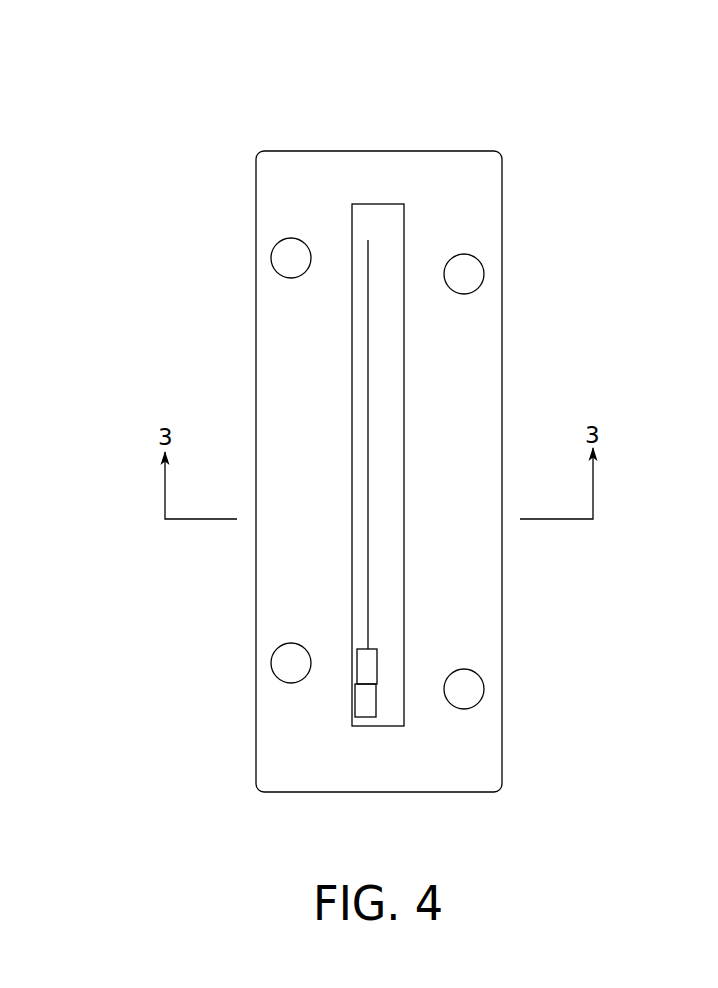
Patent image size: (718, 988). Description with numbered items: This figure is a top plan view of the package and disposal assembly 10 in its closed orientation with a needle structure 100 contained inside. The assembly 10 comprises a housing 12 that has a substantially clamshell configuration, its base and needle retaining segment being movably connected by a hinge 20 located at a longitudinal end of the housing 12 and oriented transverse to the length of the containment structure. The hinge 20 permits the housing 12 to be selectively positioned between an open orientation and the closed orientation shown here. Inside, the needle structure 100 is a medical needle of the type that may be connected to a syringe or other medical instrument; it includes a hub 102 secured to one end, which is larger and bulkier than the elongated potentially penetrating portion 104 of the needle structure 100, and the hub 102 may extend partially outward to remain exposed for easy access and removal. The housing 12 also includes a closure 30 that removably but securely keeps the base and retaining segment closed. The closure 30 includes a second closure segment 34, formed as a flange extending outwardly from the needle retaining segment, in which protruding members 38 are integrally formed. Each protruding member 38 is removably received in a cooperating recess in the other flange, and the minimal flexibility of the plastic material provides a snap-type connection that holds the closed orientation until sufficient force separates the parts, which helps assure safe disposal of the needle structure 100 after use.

The package and disposal assembly 10 is at (373, 434).
The housing 12 is at (354, 434).
The hinge 20 is at (428, 151).
The closure 30 is at (381, 456).
The second closure segment 34 is at (467, 347).
The protruding member 38 is at (288, 258).
The needle structure 100 is at (387, 530).
The hub 102 is at (365, 708).
The elongated potentially penetrating portion 104 is at (365, 367).